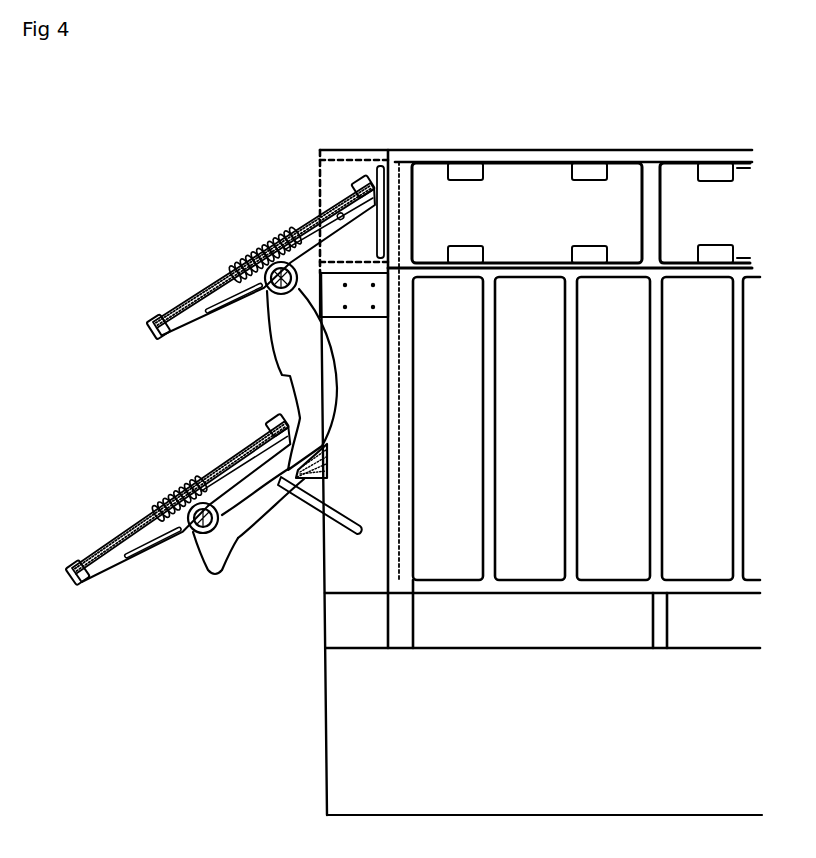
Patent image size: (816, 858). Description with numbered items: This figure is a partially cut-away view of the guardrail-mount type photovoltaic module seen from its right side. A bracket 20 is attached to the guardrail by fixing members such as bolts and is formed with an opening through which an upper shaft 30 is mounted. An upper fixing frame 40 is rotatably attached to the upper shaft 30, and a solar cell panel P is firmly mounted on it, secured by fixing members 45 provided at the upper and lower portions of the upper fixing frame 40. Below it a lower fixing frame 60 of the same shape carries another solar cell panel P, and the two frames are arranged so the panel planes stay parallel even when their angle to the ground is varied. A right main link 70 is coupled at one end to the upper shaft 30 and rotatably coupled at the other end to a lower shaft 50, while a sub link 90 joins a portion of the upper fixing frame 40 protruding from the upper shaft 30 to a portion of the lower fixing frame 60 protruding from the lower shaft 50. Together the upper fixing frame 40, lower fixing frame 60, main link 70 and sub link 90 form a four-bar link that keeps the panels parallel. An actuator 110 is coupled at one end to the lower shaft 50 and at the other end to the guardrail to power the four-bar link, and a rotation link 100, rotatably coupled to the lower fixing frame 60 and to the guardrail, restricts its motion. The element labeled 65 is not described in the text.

The bracket 20 is at (360, 296).
The upper shaft 30 is at (266, 256).
The upper fixing frame 40 is at (182, 327).
The fixing members 45 is at (365, 186).
The solar cell panel P is at (200, 293).
The lower shaft 50 is at (172, 498).
The lower fixing frame 60 is at (120, 563).
The lower end stopper 65 is at (78, 556).
The right main link 70 is at (297, 348).
The sub link 90 is at (233, 568).
The rotation link 100 is at (296, 500).
The actuator 110 is at (262, 452).